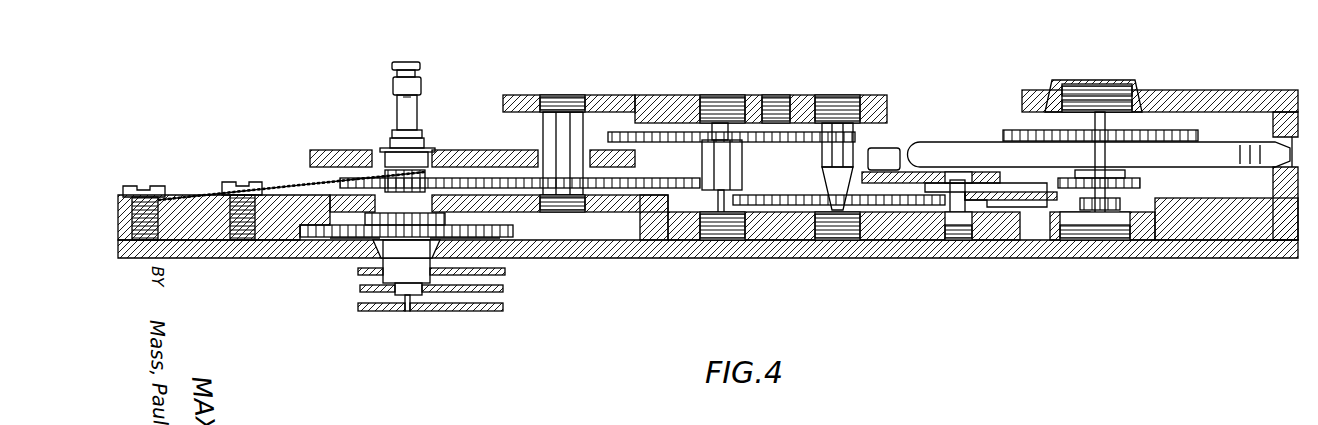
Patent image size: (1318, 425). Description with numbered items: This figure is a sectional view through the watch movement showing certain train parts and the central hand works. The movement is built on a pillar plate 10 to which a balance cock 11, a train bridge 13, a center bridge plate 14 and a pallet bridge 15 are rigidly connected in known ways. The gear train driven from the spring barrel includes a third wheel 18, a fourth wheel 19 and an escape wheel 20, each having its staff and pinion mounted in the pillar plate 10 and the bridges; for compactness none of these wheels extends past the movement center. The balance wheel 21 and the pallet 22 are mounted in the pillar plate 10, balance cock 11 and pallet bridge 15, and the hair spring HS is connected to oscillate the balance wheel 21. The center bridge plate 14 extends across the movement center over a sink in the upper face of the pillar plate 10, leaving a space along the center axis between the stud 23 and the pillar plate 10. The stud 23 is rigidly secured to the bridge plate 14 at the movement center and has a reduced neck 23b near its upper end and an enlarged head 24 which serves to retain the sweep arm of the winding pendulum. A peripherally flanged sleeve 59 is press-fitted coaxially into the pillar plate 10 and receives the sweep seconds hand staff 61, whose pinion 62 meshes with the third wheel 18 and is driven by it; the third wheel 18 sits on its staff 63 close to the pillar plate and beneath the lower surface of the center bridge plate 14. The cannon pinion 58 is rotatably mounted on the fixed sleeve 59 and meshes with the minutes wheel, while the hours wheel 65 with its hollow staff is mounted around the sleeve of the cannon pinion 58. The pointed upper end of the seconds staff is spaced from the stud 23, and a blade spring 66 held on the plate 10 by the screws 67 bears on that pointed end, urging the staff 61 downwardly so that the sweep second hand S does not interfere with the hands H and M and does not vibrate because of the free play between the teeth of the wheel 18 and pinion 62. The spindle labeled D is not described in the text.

The pillar plate 10 is at (662, 236).
The balance cock 11 is at (1268, 96).
The train bridge 13 is at (652, 95).
The center bridge plate 14 is at (478, 148).
The pallet bridge 15 is at (896, 148).
The third wheel 18 is at (505, 178).
The fourth wheel 19 is at (662, 137).
The escape wheel 20 is at (779, 195).
The balance wheel 21 is at (972, 142).
The pallet 22 is at (1000, 202).
The stud 23 is at (398, 88).
The reduced neck 23b is at (416, 73).
The enlarged head 24 is at (410, 62).
The cannon pinion 58 is at (415, 236).
The peripherally flanged sleeve 59 is at (415, 205).
The sweep seconds hand staff 61 is at (408, 311).
The pinion 62 is at (395, 185).
The third wheel staff 63 is at (562, 97).
The hours wheel 65 is at (500, 237).
The blade spring 66 is at (330, 185).
The screws 67 is at (150, 185).
The hours hand H is at (358, 272).
The minutes hand M is at (360, 289).
The sweep second hand S is at (358, 307).
The hair spring HS is at (1010, 130).
The spindle D is at (948, 241).